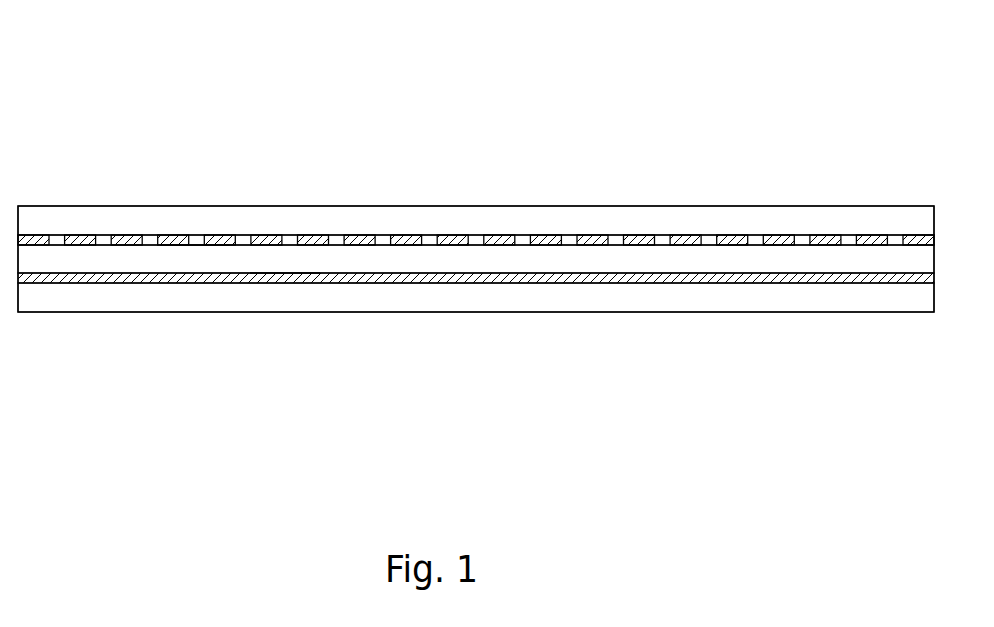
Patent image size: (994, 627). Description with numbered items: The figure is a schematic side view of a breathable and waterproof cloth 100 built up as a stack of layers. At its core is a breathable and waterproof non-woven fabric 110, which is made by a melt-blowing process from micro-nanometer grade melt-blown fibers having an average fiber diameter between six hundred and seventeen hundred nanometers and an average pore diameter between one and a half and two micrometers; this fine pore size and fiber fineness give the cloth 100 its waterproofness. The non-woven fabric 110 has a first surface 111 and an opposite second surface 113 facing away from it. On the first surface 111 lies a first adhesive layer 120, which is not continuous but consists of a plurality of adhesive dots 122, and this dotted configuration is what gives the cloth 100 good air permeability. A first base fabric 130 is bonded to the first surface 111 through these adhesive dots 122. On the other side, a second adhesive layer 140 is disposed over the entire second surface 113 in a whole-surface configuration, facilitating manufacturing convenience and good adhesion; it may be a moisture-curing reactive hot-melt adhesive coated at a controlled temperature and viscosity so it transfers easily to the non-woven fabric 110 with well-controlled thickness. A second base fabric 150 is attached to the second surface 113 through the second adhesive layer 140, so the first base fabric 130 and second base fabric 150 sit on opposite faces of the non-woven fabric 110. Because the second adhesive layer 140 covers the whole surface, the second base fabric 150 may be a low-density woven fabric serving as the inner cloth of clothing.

The breathable and waterproof cloth 100 is at (104, 62).
The breathable and waterproof non-woven fabric 110 is at (365, 260).
The first surface 111 is at (191, 268).
The second surface 113 is at (288, 248).
The first adhesive layer 120 is at (452, 238).
The adhesive dots 122 is at (476, 200).
The first base fabric 130 is at (533, 217).
The second adhesive layer 140 is at (385, 277).
The second base fabric 150 is at (325, 298).